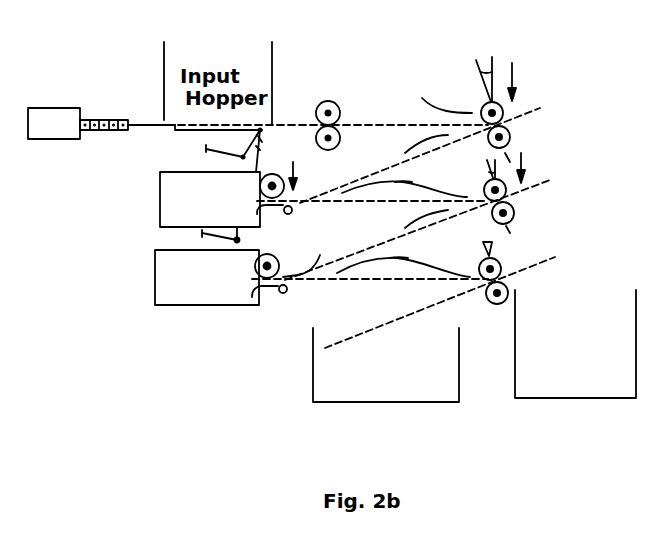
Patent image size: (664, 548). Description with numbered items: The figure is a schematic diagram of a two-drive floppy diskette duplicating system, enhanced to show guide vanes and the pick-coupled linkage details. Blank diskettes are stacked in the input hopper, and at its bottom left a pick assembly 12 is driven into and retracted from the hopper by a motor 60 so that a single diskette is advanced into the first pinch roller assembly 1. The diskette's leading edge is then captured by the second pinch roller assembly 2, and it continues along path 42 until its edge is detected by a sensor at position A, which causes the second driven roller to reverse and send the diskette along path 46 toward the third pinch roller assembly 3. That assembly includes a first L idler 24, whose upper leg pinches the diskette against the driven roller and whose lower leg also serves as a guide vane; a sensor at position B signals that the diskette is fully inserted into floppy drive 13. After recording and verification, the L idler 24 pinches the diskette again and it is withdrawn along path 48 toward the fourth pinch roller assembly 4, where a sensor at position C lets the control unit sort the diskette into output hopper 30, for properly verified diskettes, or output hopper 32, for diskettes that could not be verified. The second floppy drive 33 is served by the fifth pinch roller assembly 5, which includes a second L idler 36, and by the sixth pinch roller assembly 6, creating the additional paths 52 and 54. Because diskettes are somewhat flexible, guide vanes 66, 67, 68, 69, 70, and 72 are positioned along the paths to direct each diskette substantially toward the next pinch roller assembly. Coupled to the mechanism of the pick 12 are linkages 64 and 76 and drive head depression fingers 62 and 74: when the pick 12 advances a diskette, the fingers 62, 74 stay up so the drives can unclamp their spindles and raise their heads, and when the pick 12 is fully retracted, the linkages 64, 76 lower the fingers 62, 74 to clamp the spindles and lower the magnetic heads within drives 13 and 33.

The motor 60 is at (72, 108).
The pick assembly 12 is at (175, 128).
The drive head depression finger 62 is at (207, 150).
The linkage 64 is at (262, 140).
The linkage 76 is at (258, 148).
The path 42 is at (357, 123).
The first pinch roller assembly 1 is at (334, 113).
The floppy drive 13 is at (160, 182).
The third pinch roller assembly 3 is at (274, 175).
The first L idler 24 is at (288, 214).
The path 48 is at (362, 203).
The drive head depression finger 74 is at (202, 233).
The floppy drive 33 is at (155, 273).
The fifth pinch roller assembly 5 is at (267, 252).
The second L idler 36 is at (280, 300).
The path 54 is at (357, 282).
The guide vane 70 is at (298, 275).
The guide vane 66 is at (450, 110).
The guide vane 67 is at (425, 135).
The second pinch roller assembly 2 is at (487, 109).
The path 46 is at (328, 190).
The guide vane 68 is at (418, 180).
The guide vane 69 is at (445, 210).
The fourth pinch roller assembly 4 is at (488, 196).
The path 52 is at (330, 267).
The guide vane 72 is at (413, 260).
The sixth pinch roller assembly 6 is at (481, 273).
The output hopper 30 is at (400, 403).
The output hopper 32 is at (552, 400).
The sensor position A is at (513, 70).
The sensor position B is at (300, 171).
The sensor position C is at (530, 164).